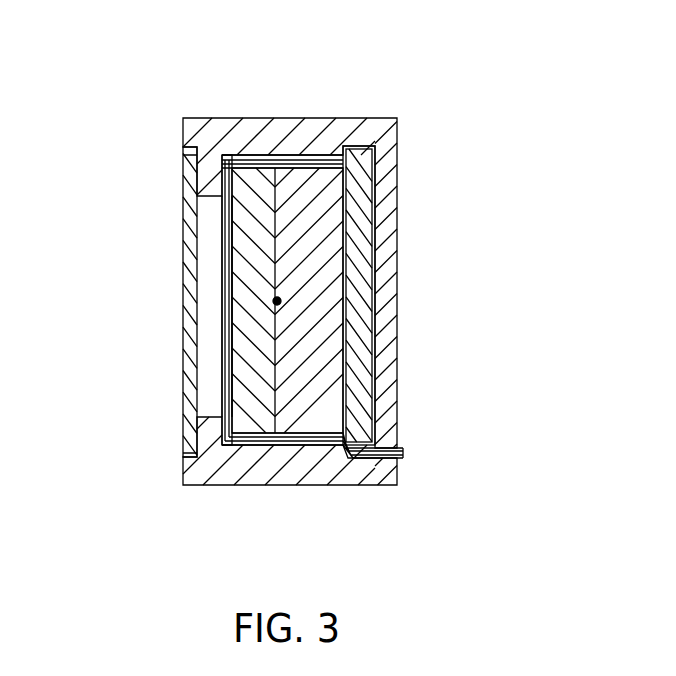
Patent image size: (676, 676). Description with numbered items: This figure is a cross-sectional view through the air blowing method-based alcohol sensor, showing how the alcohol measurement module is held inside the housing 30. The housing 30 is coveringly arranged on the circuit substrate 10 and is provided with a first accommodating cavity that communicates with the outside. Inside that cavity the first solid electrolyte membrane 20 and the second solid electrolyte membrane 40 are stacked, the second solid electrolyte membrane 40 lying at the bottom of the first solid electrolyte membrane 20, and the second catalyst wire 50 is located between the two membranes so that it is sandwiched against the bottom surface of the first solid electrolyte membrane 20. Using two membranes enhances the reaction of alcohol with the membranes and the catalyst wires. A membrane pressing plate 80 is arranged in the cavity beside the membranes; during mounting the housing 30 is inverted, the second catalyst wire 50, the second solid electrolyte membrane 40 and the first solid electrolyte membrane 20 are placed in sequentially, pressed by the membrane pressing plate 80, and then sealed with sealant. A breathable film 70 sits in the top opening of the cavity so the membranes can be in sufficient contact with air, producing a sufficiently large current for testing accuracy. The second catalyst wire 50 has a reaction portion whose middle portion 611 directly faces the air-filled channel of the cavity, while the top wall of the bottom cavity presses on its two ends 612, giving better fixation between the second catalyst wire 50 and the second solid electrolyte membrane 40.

The circuit substrate 10 is at (385, 303).
The first solid electrolyte membrane 20 is at (258, 190).
The housing 30 is at (284, 468).
The second solid electrolyte membrane 40 is at (315, 190).
The second catalyst wire 50 is at (277, 301).
The breathable film 70 is at (183, 207).
The membrane pressing plate 80 is at (365, 215).
The middle portion of the second reaction portion 611 is at (222, 275).
The two ends of the second reaction portion 612 is at (222, 168).